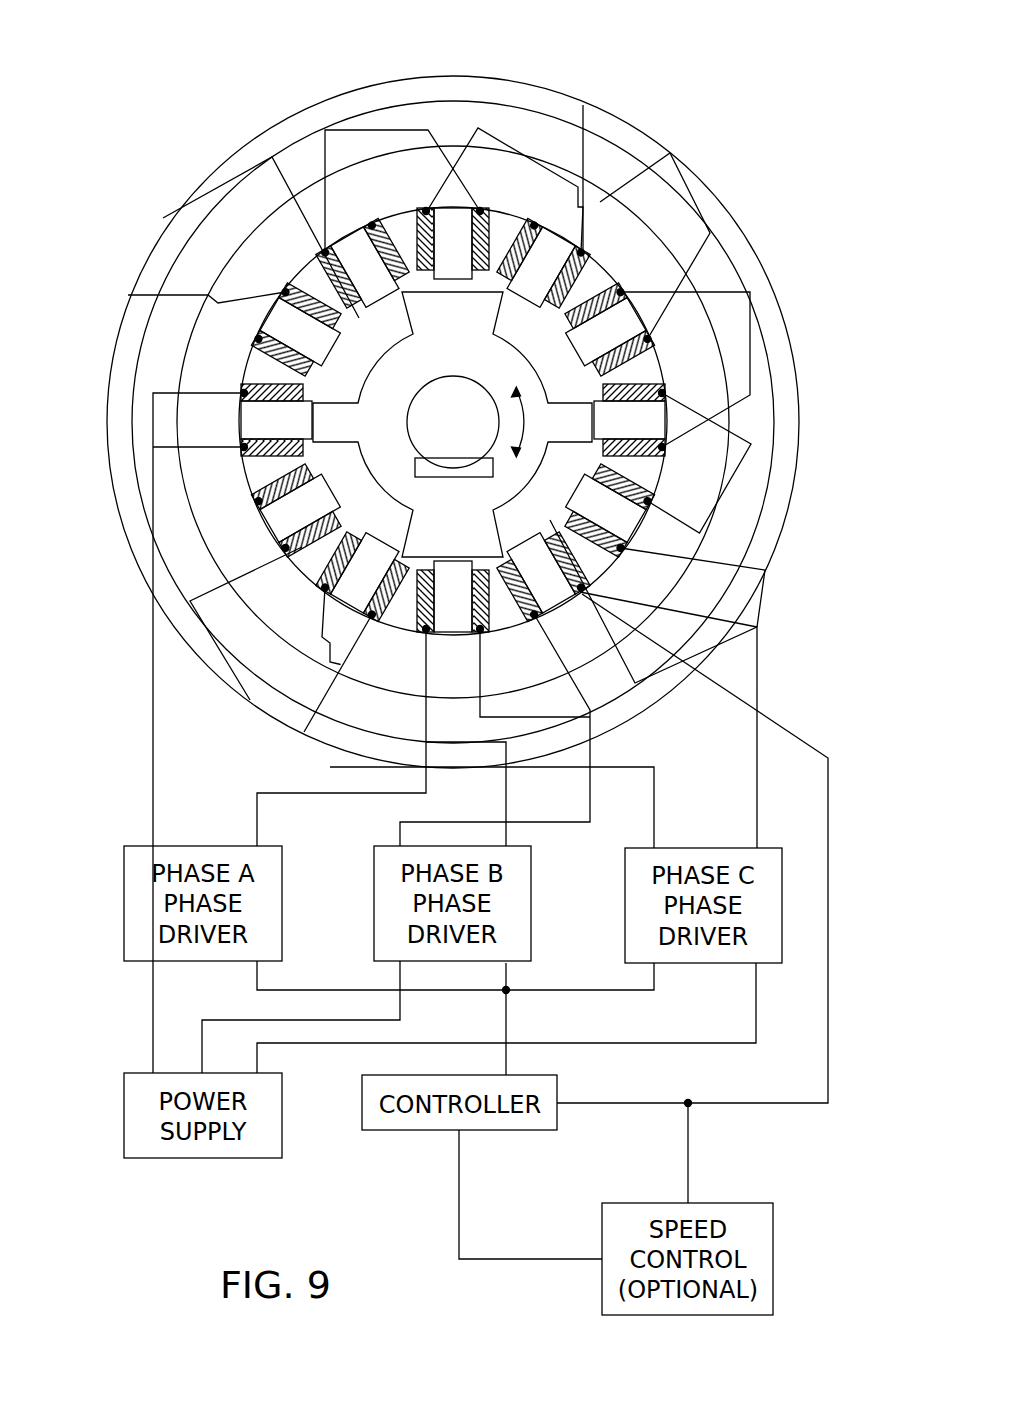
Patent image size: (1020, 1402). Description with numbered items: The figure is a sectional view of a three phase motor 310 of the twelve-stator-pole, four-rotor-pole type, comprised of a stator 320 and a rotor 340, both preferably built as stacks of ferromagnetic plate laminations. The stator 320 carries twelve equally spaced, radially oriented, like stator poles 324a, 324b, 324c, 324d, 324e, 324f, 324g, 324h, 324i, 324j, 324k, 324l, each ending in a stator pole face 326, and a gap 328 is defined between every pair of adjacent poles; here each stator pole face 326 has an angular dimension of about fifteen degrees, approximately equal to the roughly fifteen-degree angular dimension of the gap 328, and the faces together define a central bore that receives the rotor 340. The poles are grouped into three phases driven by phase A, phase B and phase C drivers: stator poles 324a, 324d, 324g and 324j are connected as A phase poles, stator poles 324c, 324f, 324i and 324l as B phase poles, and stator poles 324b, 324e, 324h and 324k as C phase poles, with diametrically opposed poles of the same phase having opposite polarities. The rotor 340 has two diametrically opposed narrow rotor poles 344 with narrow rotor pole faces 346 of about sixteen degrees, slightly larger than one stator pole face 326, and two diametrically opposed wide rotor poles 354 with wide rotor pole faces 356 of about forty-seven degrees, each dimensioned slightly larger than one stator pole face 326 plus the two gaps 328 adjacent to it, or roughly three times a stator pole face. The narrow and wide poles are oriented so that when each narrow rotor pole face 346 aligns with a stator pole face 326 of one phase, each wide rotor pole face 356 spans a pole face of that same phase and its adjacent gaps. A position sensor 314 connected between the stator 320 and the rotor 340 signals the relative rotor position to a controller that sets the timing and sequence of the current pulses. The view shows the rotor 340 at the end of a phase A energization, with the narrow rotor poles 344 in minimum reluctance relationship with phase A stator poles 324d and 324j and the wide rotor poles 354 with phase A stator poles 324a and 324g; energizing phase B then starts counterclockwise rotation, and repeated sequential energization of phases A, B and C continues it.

The three phase motor 310 is at (183, 138).
The position sensor 314 is at (470, 474).
The stator 320 is at (180, 362).
The stator pole 324a is at (481, 213).
The stator pole 324b is at (550, 267).
The stator pole 324c is at (620, 332).
The stator pole 324d is at (663, 395).
The stator pole 324e is at (620, 514).
The stator pole 324f is at (693, 648).
The stator pole 324g is at (472, 648).
The stator pole 324h is at (350, 587).
The stator pole 324i is at (257, 504).
The stator pole 324j is at (260, 432).
The stator pole 324k is at (288, 330).
The stator pole 324l is at (363, 257).
The stator pole face 326 is at (303, 349).
The gap 328 is at (363, 328).
The rotor 340 is at (521, 345).
The narrow rotor pole 344 is at (337, 432).
The narrow rotor pole face 346 is at (640, 427).
The wide rotor pole 354 is at (455, 237).
The wide rotor pole face 356 is at (403, 262).